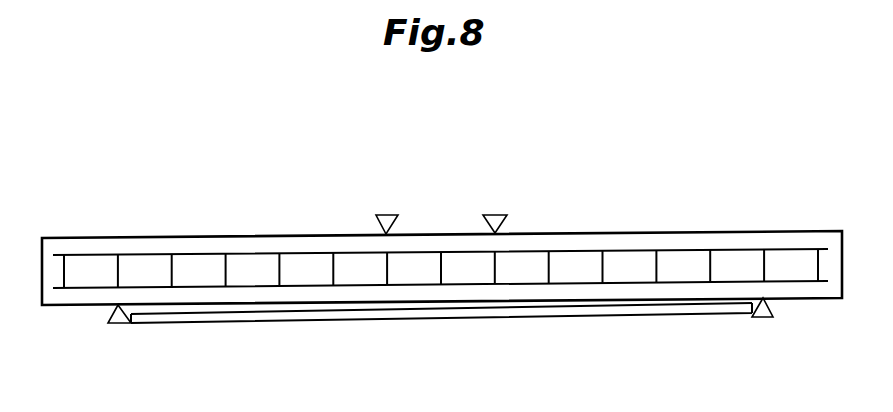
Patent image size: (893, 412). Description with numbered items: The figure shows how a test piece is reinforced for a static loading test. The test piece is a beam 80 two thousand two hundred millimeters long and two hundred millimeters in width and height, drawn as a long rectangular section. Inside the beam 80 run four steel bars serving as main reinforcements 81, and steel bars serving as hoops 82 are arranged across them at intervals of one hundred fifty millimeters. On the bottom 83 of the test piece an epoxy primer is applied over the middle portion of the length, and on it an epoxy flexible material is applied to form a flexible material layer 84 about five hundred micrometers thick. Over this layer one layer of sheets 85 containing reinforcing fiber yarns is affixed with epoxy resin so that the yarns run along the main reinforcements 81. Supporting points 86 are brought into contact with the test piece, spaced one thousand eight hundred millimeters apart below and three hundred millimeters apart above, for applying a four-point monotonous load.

The beam 80 is at (623, 226).
The main reinforcements 81 is at (685, 248).
The hoops 82 is at (766, 259).
The bottom 83 is at (812, 299).
The flexible material layer 84 is at (670, 304).
The sheets containing reinforcing fiber yarns 85 is at (613, 315).
The supporting points 86 is at (385, 220).